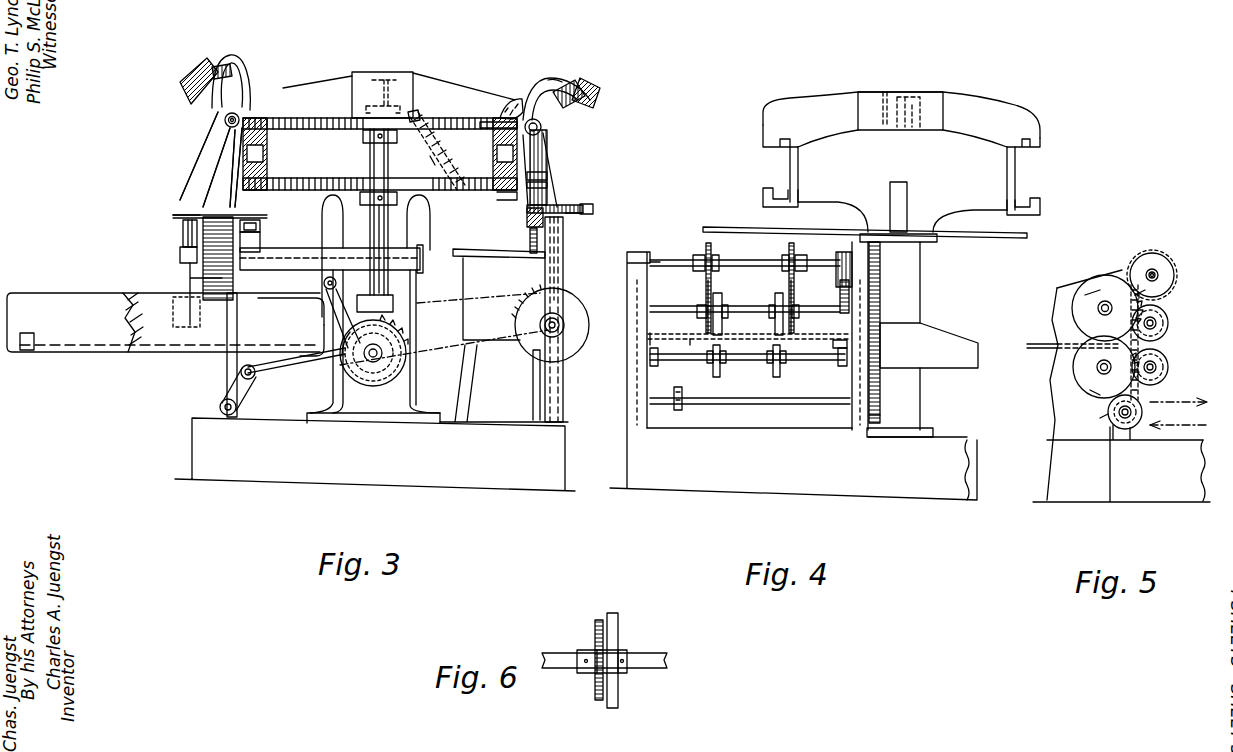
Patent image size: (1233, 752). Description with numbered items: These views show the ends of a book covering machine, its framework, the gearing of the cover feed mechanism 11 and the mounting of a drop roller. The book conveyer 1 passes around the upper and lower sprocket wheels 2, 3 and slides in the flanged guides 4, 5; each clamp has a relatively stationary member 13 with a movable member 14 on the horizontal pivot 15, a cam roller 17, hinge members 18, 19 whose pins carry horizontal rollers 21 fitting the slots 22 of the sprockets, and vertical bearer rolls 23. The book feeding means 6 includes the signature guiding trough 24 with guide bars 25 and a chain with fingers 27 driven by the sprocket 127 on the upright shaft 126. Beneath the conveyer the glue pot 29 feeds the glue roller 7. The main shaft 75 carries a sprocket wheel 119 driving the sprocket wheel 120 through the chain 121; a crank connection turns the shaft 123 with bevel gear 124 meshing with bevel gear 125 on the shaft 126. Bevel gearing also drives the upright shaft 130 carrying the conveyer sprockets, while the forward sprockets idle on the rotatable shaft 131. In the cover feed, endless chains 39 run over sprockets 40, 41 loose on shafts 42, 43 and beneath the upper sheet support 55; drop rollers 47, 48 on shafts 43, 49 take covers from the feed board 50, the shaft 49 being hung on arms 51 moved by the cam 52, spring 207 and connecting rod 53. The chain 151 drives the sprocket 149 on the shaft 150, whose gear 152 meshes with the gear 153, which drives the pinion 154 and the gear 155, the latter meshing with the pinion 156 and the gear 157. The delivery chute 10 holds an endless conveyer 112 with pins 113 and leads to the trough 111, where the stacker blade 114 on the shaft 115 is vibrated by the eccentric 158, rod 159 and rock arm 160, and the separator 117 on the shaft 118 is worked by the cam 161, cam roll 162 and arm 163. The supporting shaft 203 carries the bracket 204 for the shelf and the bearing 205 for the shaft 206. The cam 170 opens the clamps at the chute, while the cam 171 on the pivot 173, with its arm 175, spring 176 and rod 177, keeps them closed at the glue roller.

In FIG. 3, the book conveyer 1 is at (222, 117).
In FIG. 3, the upper sprocket wheel 2 is at (318, 118).
In FIG. 3, the lower sprocket wheel 3 is at (312, 182).
In FIG. 4, the upper guide 4 is at (773, 136).
In FIG. 3, the lower guide 5 is at (505, 193).
In FIG. 4, the lower guide 5 is at (765, 195).
In FIG. 3, the book feeding means 6 is at (568, 208).
In FIG. 3, the glue roller 7 is at (534, 243).
In FIG. 3, the delivery chute 10 is at (213, 264).
In FIG. 4, the cover feed mechanism 11 is at (745, 253).
In FIG. 5, the cover feed mechanism 11 is at (1080, 276).
In FIG. 3, the relatively stationary member 13 is at (236, 155).
In FIG. 3, the movable member 14 is at (215, 138).
In FIG. 3, the horizontal pivot 15 is at (234, 110).
In FIG. 3, the cam roller 17 is at (228, 68).
In FIG. 3, the hinge member 18 is at (257, 135).
In FIG. 3, the hinge member 19 is at (258, 153).
In FIG. 3, the horizontally disposed roller 21 is at (253, 125).
In FIG. 3, the slot 22 is at (385, 125).
In FIG. 3, the vertically disposed bearer roll 23 is at (240, 170).
In FIG. 3, the signature guiding trough 24 is at (528, 220).
In FIG. 3, the guide bar 25 is at (548, 184).
In FIG. 3, the finger 27 is at (588, 210).
In FIG. 3, the glue pot 29 is at (504, 335).
In FIG. 4, the endless chain 39 is at (700, 270).
In FIG. 4, the sprocket 40 is at (706, 248).
In FIG. 4, the sprocket 41 is at (705, 322).
In FIG. 6, the sprocket 41 is at (597, 625).
In FIG. 4, the shaft 42 is at (658, 262).
In FIG. 5, the shaft 42 is at (1148, 268).
In FIG. 4, the shaft 43 is at (666, 306).
In FIG. 5, the shaft 43 is at (1156, 320).
In FIG. 6, the shaft 43 is at (645, 660).
In FIG. 4, the drop roller 47 is at (724, 300).
In FIG. 5, the drop roller 47 is at (1168, 326).
In FIG. 6, the drop roller 47 is at (612, 625).
In FIG. 4, the drop roller 48 is at (720, 372).
In FIG. 5, the drop roller 48 is at (1165, 380).
In FIG. 4, the shaft 49 is at (672, 360).
In FIG. 5, the shaft 49 is at (1156, 365).
In FIG. 4, the feed board 50 is at (748, 340).
In FIG. 5, the feed board 50 is at (1035, 344).
In FIG. 4, the arm 51 is at (650, 355).
In FIG. 5, the arm 51 is at (1100, 394).
In FIG. 4, the cam 52 is at (846, 255).
In FIG. 5, the cam 52 is at (1156, 262).
In FIG. 4, the connecting rod 53 is at (840, 295).
In FIG. 5, the connecting rod 53 is at (1097, 362).
In FIG. 3, the upper sheet support 55 is at (183, 226).
In FIG. 4, the upper sheet support 55 is at (988, 231).
In FIG. 3, the main shaft 75 is at (370, 362).
In FIG. 3, the trough 111 is at (163, 322).
In FIG. 3, the endless conveyer 112 is at (225, 215).
In FIG. 3, the pin 113 is at (178, 216).
In FIG. 3, the stacker blade 114 is at (227, 330).
In FIG. 3, the shaft 115 is at (220, 408).
In FIG. 3, the separator 117 is at (187, 281).
In FIG. 3, the shaft 118 is at (327, 280).
In FIG. 3, the sprocket wheel 119 is at (378, 385).
In FIG. 3, the sprocket wheel 120 is at (530, 352).
In FIG. 3, the chain 121 is at (460, 362).
In FIG. 3, the shaft 123 is at (560, 320).
In FIG. 3, the bevel gear 124 is at (588, 328).
In FIG. 3, the bevel gear 125 is at (558, 300).
In FIG. 3, the upright shaft 126 is at (562, 275).
In FIG. 3, the sprocket 127 is at (575, 216).
In FIG. 4, the upright shaft 130 is at (898, 193).
In FIG. 3, the rotatable shaft 131 is at (386, 232).
In FIG. 4, the sprocket 149 is at (678, 412).
In FIG. 5, the sprocket 149 is at (1116, 420).
In FIG. 4, the shaft 150 is at (745, 405).
In FIG. 5, the shaft 150 is at (1128, 430).
In FIG. 5, the chain 151 is at (1142, 413).
In FIG. 4, the gear 152 is at (880, 413).
In FIG. 5, the gear 152 is at (1108, 415).
In FIG. 4, the gear 153 is at (885, 375).
In FIG. 5, the pinion 154 is at (1162, 368).
In FIG. 5, the gear 155 is at (1072, 302).
In FIG. 5, the pinion 156 is at (1170, 300).
In FIG. 4, the gear 157 is at (885, 250).
In FIG. 5, the gear 157 is at (1130, 265).
In FIG. 3, the eccentric 158 is at (402, 345).
In FIG. 3, the rod 159 is at (292, 365).
In FIG. 3, the rock arm 160 is at (224, 390).
In FIG. 3, the cam 161 is at (352, 382).
In FIG. 3, the cam roll 162 is at (322, 334).
In FIG. 3, the arm 163 is at (322, 310).
In FIG. 3, the cam 170 is at (190, 69).
In FIG. 3, the cam 171 is at (553, 80).
In FIG. 3, the pivot 173 is at (518, 105).
In FIG. 3, the arm 175 is at (470, 118).
In FIG. 3, the spring 176 is at (442, 185).
In FIG. 3, the rod 177 is at (415, 168).
In FIG. 3, the supporting shaft 203 is at (331, 259).
In FIG. 3, the bracket 204 is at (186, 250).
In FIG. 3, the bearing 205 is at (262, 243).
In FIG. 3, the shaft 206 is at (262, 225).
In FIG. 4, the spring 207 is at (876, 290).
In FIG. 5, the spring 207 is at (1134, 340).